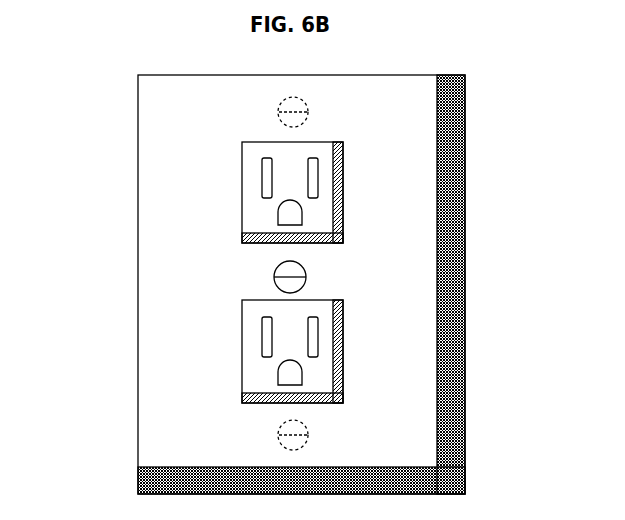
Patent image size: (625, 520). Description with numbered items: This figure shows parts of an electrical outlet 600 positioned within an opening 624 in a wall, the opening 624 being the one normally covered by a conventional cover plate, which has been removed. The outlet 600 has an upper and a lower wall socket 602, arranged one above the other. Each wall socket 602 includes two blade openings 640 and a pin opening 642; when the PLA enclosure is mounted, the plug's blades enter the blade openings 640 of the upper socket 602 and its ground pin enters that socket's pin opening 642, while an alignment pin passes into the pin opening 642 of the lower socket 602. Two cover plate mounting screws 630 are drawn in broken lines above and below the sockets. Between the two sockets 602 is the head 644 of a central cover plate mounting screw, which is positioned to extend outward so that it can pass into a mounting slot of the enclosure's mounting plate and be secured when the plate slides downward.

The electrical outlet 600 is at (465, 108).
The wall socket 602 is at (343, 330).
The opening 624 is at (465, 326).
The cover plate mounting screws 630 is at (278, 110).
The blade openings 640 is at (262, 186).
The pin opening 642 is at (277, 218).
The head 644 is at (274, 277).